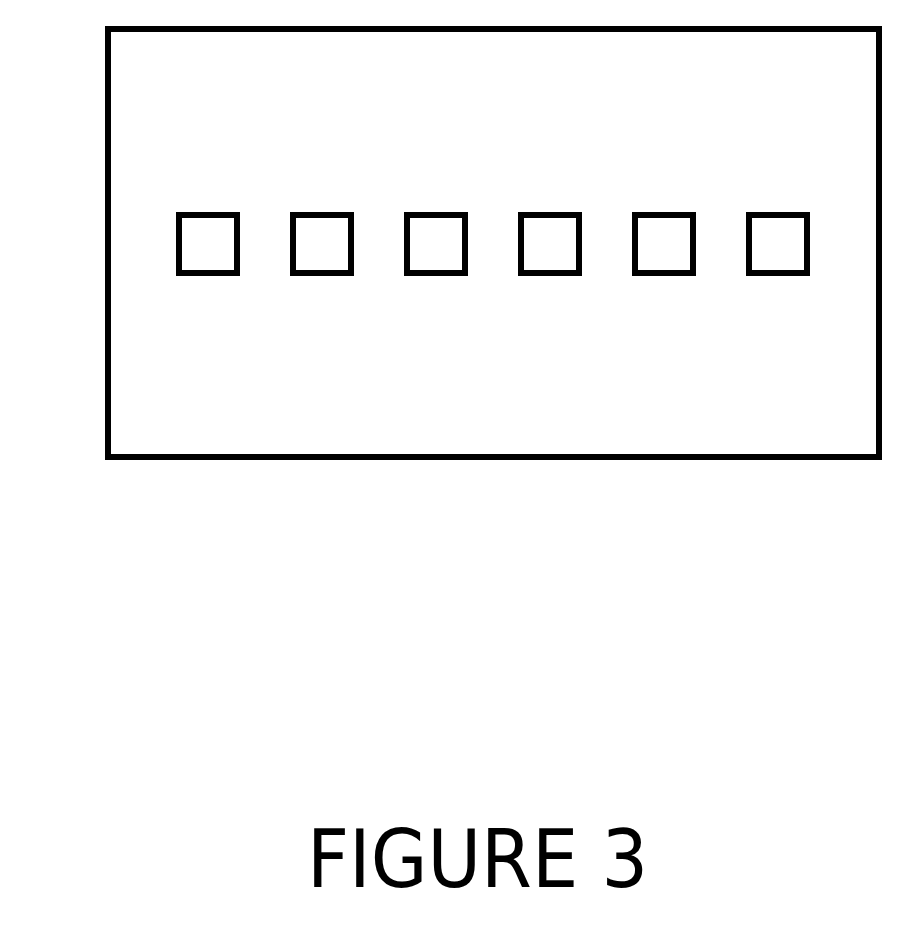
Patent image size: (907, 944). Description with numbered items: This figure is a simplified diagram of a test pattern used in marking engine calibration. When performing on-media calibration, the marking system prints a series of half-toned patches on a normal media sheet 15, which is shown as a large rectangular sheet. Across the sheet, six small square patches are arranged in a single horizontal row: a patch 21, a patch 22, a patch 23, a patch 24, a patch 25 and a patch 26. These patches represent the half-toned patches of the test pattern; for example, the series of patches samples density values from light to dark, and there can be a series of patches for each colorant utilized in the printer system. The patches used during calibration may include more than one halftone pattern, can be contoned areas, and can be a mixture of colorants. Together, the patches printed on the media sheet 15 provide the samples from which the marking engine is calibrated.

The media sheet 15 is at (483, 460).
The patch 21 is at (203, 276).
The patch 22 is at (317, 276).
The patch 23 is at (429, 276).
The patch 24 is at (543, 276).
The patch 25 is at (657, 276).
The patch 26 is at (771, 276).